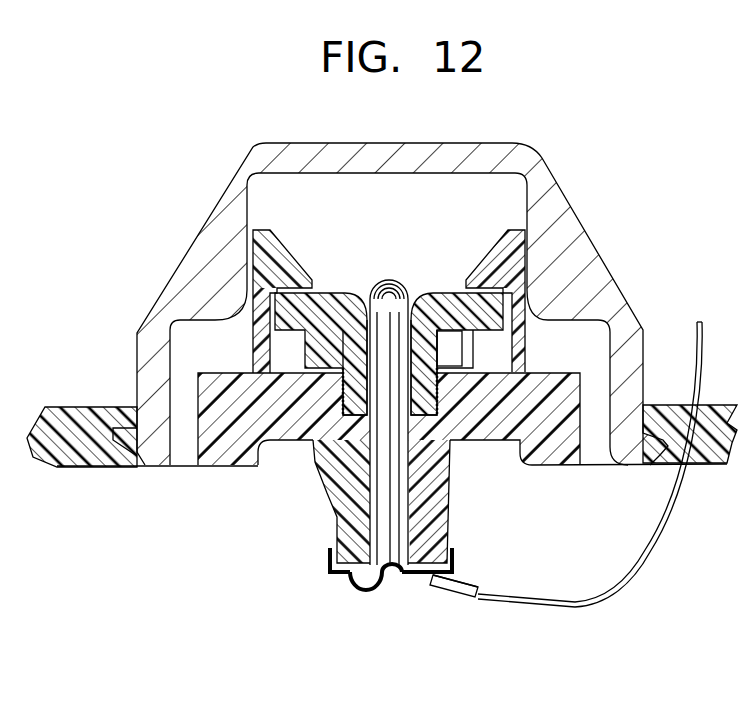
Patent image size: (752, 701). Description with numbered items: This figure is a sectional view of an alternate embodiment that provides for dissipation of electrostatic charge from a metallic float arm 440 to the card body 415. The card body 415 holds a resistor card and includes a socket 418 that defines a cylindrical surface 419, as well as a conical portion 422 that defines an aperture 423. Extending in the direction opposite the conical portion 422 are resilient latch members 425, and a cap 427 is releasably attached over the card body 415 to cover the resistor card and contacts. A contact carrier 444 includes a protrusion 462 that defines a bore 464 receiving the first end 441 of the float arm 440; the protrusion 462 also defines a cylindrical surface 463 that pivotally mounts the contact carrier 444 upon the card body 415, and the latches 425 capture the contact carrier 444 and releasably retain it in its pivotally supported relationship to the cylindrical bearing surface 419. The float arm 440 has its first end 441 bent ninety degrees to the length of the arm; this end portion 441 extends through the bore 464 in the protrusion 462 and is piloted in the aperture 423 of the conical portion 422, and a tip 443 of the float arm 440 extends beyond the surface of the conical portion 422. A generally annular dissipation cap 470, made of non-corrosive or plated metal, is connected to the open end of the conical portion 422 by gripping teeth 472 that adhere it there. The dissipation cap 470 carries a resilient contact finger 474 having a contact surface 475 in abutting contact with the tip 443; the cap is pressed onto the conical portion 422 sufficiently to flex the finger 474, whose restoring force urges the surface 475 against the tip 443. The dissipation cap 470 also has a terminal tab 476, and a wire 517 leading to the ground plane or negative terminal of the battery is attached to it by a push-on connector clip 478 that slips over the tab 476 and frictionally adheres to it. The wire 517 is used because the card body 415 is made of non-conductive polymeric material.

The card body 415 is at (521, 466).
The socket 418 is at (322, 464).
The cylindrical surface 419 is at (446, 450).
The conical portion 422 is at (322, 490).
The aperture 423 is at (368, 528).
The resilient latch members 425 is at (268, 232).
The cap 427 is at (257, 202).
The float arm 440 is at (373, 282).
The first end 441 is at (400, 478).
The tip 443 is at (408, 582).
The contact carrier 444 is at (317, 290).
The protrusion 462 is at (440, 340).
The cylindrical surface 463 is at (343, 416).
The bore 464 is at (440, 364).
The dissipation cap 470 is at (454, 556).
The gripping teeth 472 is at (330, 550).
The resilient contact finger 474 is at (355, 592).
The contact surface 475 is at (391, 580).
The terminal tab 476 is at (445, 576).
The push-on connector clip 478 is at (455, 596).
The wire 517 is at (598, 596).